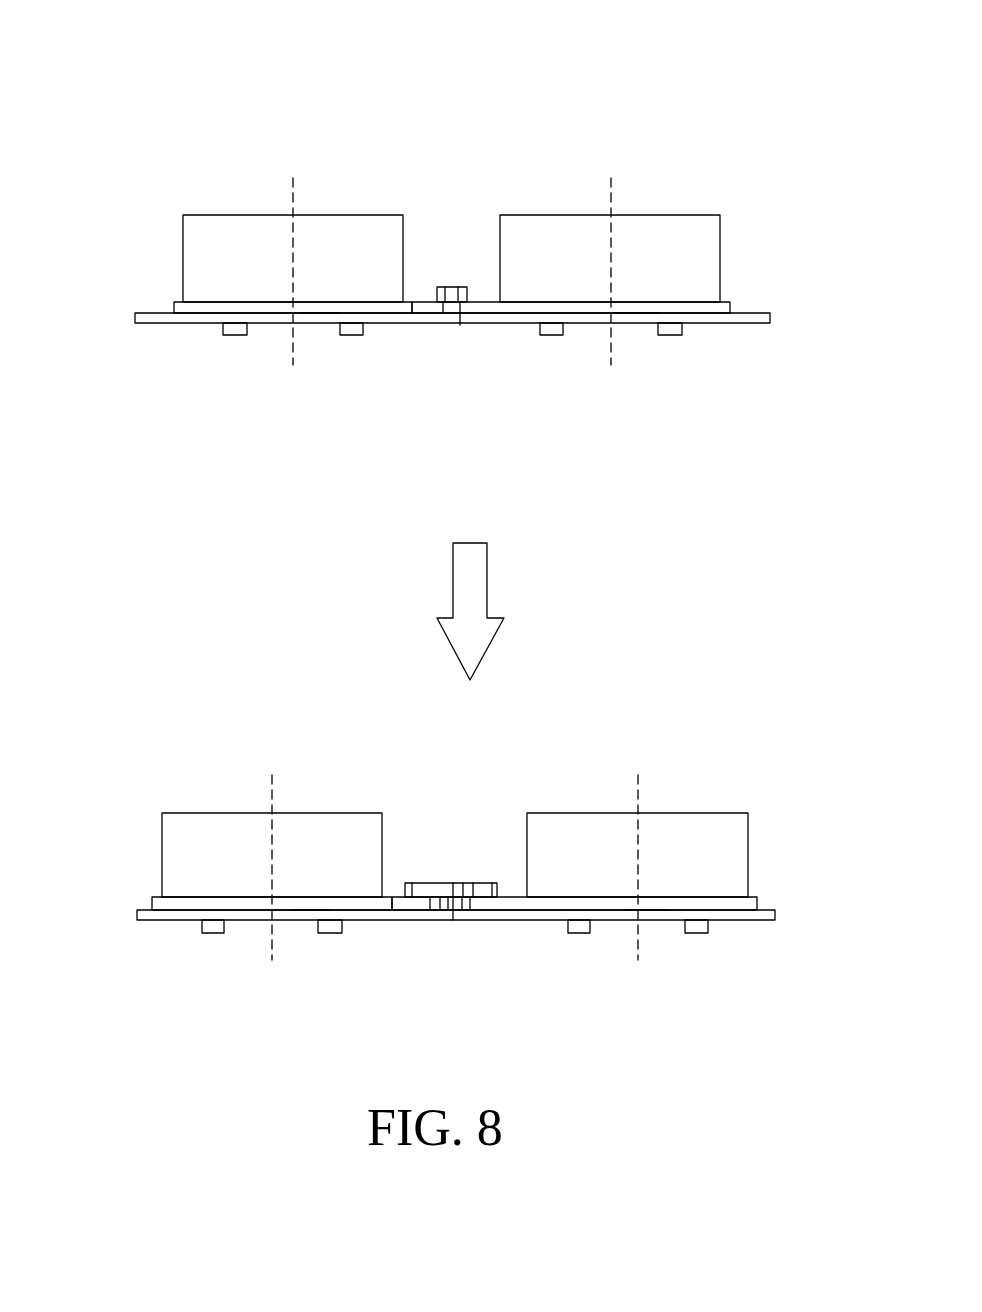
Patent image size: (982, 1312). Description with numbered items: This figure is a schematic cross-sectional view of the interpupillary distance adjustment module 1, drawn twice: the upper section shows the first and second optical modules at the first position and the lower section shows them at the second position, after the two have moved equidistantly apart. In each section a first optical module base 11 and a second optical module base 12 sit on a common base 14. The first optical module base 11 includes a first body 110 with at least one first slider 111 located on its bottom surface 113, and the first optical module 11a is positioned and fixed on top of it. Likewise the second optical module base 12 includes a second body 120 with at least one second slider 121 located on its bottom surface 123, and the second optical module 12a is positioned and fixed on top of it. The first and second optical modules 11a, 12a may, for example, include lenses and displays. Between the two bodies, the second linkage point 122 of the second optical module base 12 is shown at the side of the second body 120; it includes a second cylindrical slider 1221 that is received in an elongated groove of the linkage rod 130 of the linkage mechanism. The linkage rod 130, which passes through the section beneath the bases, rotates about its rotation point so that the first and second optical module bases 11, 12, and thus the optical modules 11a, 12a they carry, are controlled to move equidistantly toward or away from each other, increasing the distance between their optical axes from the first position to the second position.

The interpupillary distance adjustment module 1 is at (207, 100).
The first optical module base 11 is at (193, 308).
The first optical module 11a is at (200, 235).
The first body 110 is at (375, 306).
The first slider 111 is at (234, 335).
The bottom surface 113 is at (318, 323).
The second optical module base 12 is at (705, 305).
The second optical module 12a is at (707, 233).
The second body 120 is at (527, 308).
The second slider 121 is at (672, 332).
The second linkage point 122 is at (447, 288).
The second cylindrical slider 1221 is at (456, 288).
The bottom surface 123 is at (637, 323).
The linkage rod 130 is at (460, 325).
The base 14 is at (133, 316).